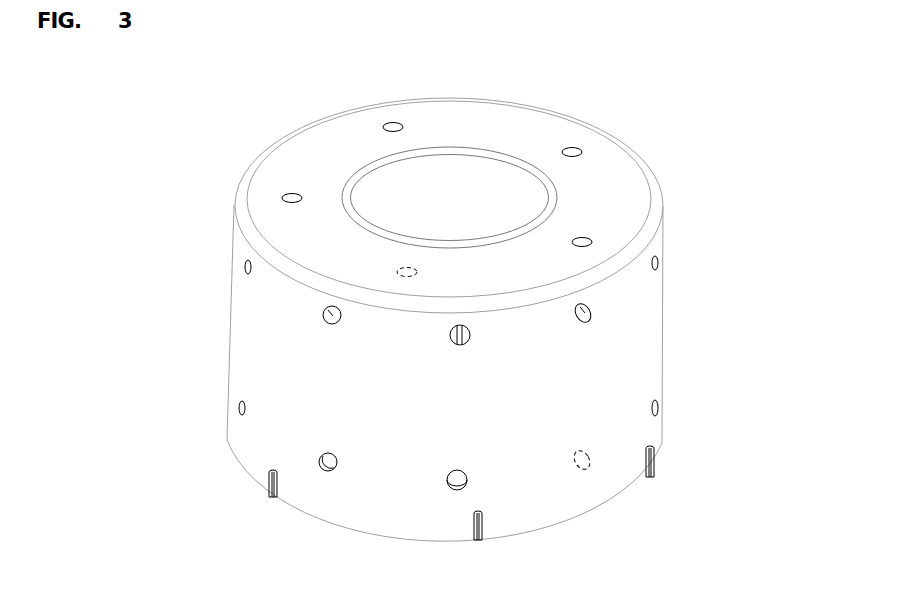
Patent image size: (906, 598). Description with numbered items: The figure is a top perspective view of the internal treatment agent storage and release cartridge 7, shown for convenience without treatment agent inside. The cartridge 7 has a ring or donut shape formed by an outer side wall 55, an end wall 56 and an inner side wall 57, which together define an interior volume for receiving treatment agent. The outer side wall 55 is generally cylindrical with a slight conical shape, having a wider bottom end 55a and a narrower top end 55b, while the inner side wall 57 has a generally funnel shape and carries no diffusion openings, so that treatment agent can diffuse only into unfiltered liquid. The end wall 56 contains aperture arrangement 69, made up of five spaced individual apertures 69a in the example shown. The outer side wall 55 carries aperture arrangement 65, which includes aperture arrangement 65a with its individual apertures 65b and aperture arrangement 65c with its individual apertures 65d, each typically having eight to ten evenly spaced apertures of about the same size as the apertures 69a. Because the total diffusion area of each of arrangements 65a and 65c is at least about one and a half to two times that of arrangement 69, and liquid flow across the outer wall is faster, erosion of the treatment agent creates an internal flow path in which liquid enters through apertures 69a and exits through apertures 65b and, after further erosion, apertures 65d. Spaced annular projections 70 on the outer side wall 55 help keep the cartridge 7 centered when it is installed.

The internal treatment agent storage and release cartridge 7 is at (668, 145).
The outer side wall 55 is at (661, 350).
The wider bottom end 55a is at (227, 441).
The narrower top end 55b is at (250, 163).
The end wall 56 is at (328, 240).
The inner side wall 57 is at (454, 205).
The aperture arrangement 65 is at (566, 338).
The aperture arrangement 65a is at (666, 240).
The apertures 65b is at (245, 267).
The aperture arrangement 65c is at (675, 396).
The apertures 65d is at (244, 410).
The aperture arrangement 69 is at (405, 122).
The apertures 69a is at (392, 124).
The projections 70 is at (270, 486).